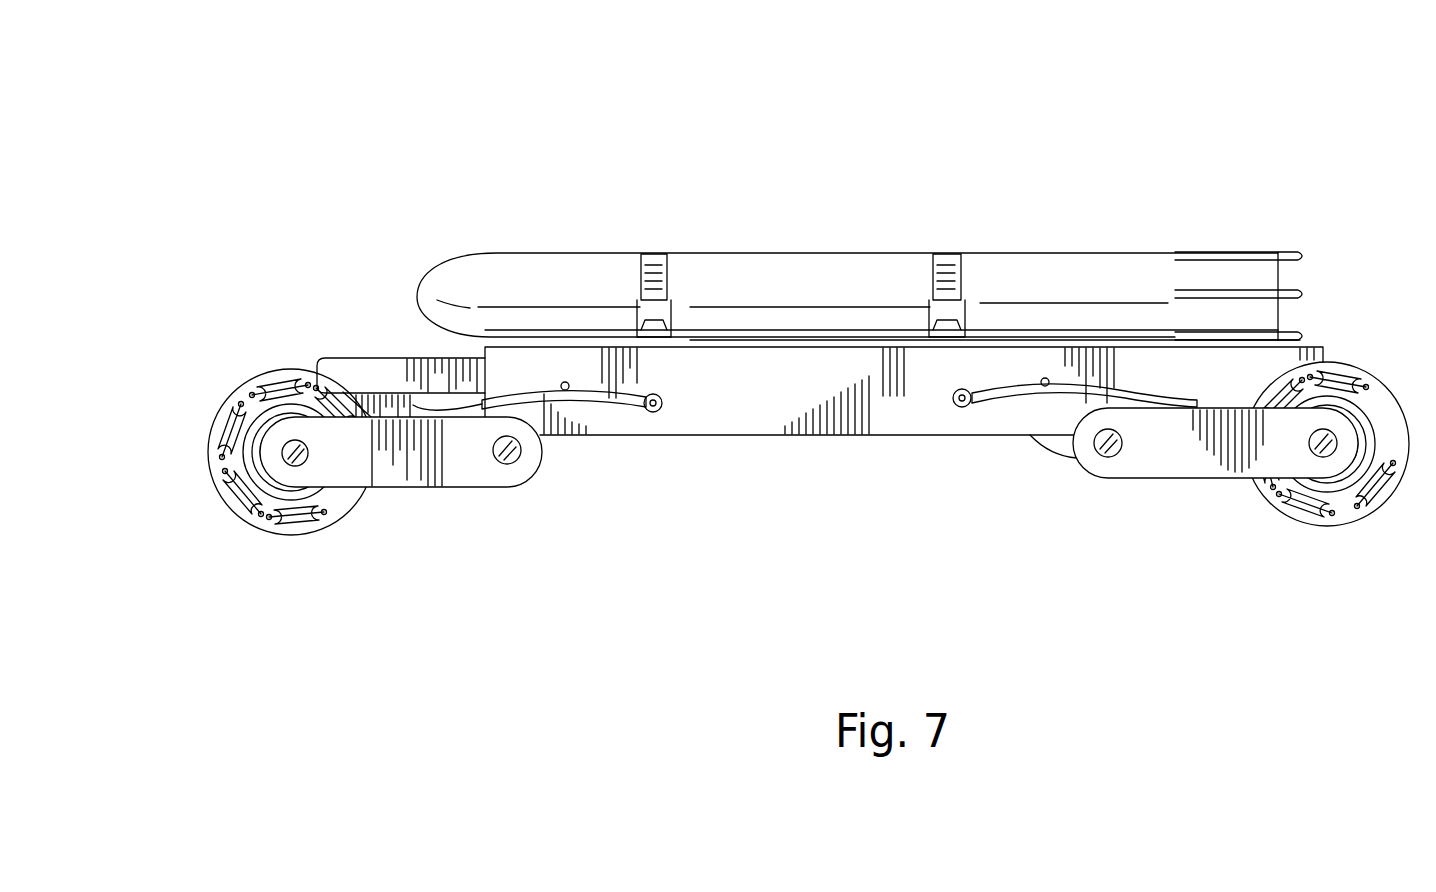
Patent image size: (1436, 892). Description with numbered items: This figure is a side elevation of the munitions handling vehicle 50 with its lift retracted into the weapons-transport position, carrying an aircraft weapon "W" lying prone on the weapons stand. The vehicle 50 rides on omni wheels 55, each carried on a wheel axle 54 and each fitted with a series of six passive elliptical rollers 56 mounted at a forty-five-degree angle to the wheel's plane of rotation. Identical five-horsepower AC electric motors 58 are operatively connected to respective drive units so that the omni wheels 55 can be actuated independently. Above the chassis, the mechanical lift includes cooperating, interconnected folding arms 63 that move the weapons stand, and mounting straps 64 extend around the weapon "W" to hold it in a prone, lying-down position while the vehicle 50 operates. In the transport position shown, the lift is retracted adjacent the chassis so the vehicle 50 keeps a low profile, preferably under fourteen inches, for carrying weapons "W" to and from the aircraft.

The munitions handling vehicle 50 is at (396, 223).
The aircraft weapon W is at (825, 256).
The mounting strap 64 is at (656, 253).
The folding arm 63 is at (370, 373).
The passive elliptical roller 56 is at (277, 370).
The omni wheel 55 is at (282, 507).
The AC electric motor 58 is at (463, 458).
The wheel axle 54 is at (298, 462).